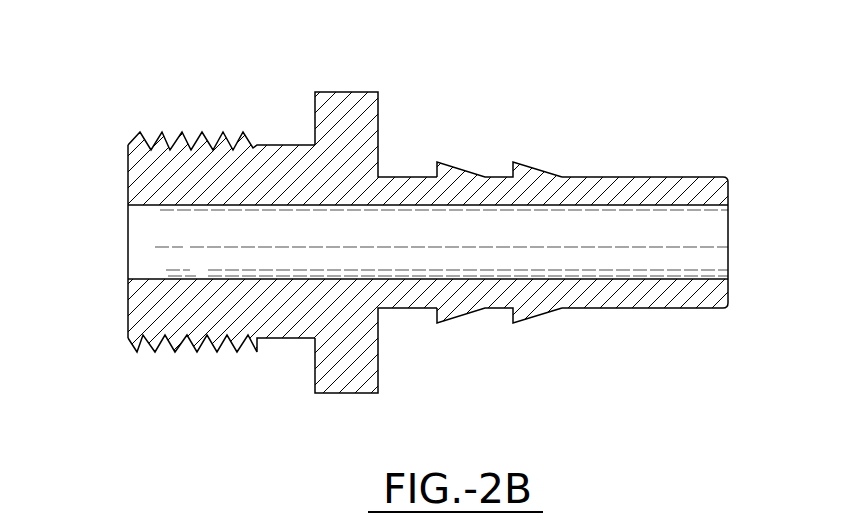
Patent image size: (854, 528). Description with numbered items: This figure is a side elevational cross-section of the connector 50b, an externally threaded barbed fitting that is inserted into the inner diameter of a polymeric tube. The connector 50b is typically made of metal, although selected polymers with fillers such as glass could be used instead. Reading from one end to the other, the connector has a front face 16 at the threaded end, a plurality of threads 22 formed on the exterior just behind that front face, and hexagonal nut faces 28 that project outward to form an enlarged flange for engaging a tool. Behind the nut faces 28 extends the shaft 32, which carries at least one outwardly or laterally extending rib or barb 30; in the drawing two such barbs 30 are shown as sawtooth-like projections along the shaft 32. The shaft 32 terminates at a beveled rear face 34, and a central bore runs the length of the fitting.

The connector 50b is at (427, 211).
The front face 16 is at (128, 318).
The threads 22 is at (215, 148).
The nut faces 28 is at (340, 92).
The rib or barb 30 is at (440, 162).
The shaft 32 is at (630, 310).
The beveled rear face 34 is at (728, 285).